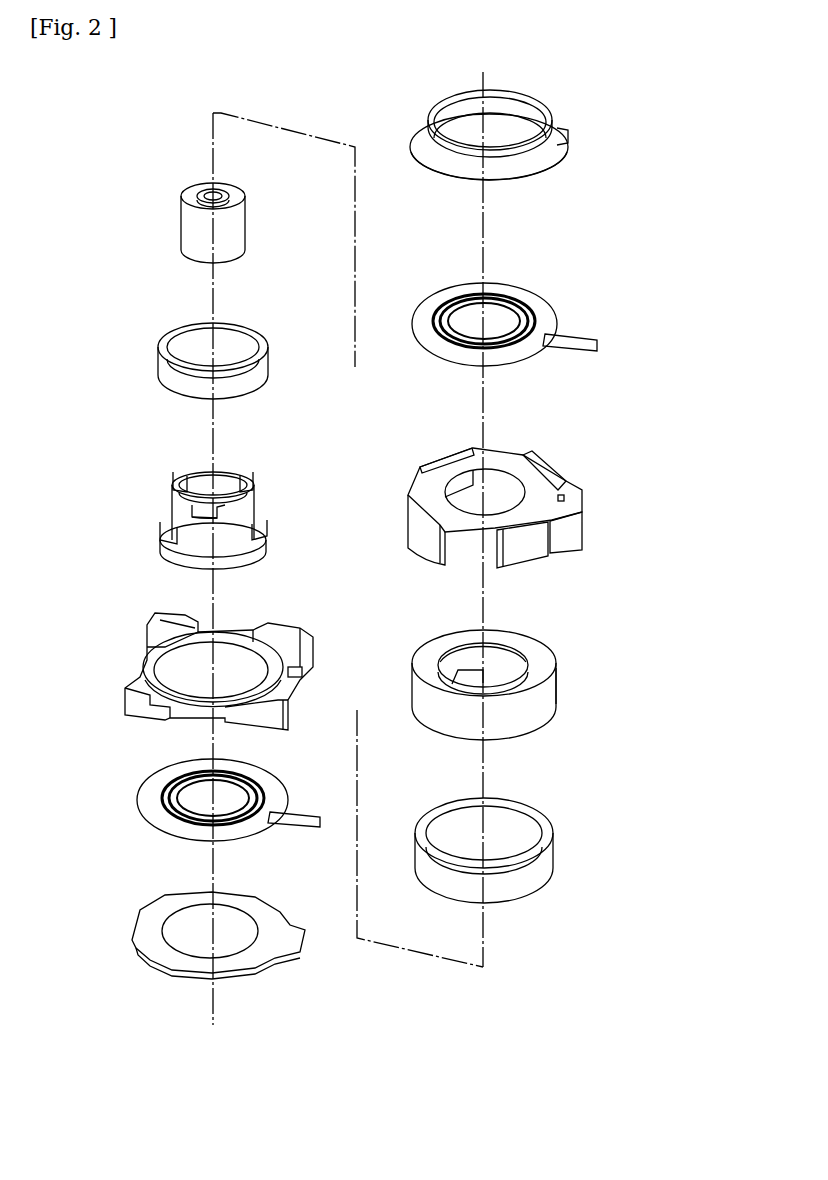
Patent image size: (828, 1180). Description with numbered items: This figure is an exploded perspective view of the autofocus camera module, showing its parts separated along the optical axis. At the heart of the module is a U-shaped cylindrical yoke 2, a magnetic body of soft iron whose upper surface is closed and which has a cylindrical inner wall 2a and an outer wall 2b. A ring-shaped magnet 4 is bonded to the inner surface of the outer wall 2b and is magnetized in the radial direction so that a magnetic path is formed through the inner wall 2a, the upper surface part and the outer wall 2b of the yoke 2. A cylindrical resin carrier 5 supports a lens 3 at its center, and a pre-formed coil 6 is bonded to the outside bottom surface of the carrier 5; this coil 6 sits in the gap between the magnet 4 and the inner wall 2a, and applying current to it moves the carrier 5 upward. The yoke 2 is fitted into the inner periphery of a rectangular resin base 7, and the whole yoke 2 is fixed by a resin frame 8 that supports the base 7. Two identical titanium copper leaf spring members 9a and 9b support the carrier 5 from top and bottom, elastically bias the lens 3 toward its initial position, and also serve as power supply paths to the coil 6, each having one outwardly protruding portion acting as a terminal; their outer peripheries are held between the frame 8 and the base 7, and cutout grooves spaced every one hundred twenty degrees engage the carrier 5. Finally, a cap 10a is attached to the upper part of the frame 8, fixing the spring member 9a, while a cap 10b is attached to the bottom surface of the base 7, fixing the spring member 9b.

The yoke 2 is at (540, 662).
The inner wall 2a is at (506, 660).
The outer wall 2b is at (545, 703).
The lens 3 is at (190, 224).
The magnet 4 is at (541, 868).
The carrier 5 is at (172, 516).
The coil 6 is at (158, 358).
The base 7 is at (142, 655).
The frame 8 is at (535, 475).
The spring member 9a is at (553, 325).
The spring member 9b is at (150, 790).
The cap 10a is at (553, 140).
The cap 10b is at (148, 922).